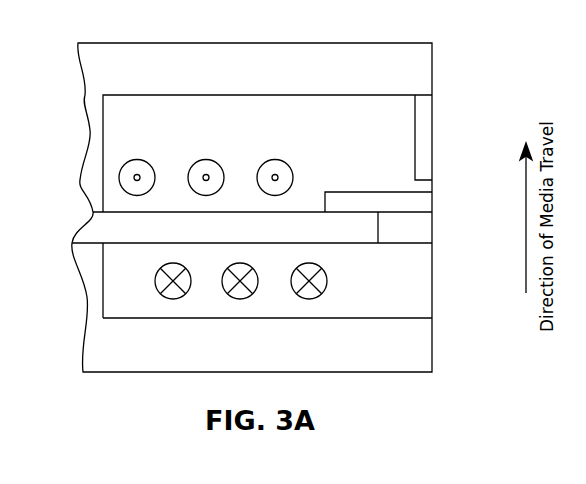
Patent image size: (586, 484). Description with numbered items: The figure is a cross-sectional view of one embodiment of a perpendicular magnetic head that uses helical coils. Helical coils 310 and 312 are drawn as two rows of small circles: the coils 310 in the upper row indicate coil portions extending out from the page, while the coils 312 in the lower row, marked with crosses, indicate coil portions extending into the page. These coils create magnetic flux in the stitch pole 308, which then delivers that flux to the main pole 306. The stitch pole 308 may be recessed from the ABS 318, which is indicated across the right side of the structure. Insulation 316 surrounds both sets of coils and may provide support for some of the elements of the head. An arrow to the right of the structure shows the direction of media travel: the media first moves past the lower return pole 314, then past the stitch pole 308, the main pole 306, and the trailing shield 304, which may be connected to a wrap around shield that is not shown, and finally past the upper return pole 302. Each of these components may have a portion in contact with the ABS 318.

The upper return pole 302 is at (341, 80).
The trailing shield 304 is at (432, 142).
The main pole 306 is at (432, 197).
The stitch pole 308 is at (286, 240).
The helical coils extending out from the page 310 is at (132, 160).
The helical coils extending into the page 312 is at (155, 286).
The lower return pole 314 is at (286, 356).
The insulation 316 is at (379, 151).
The ABS 318 is at (432, 62).